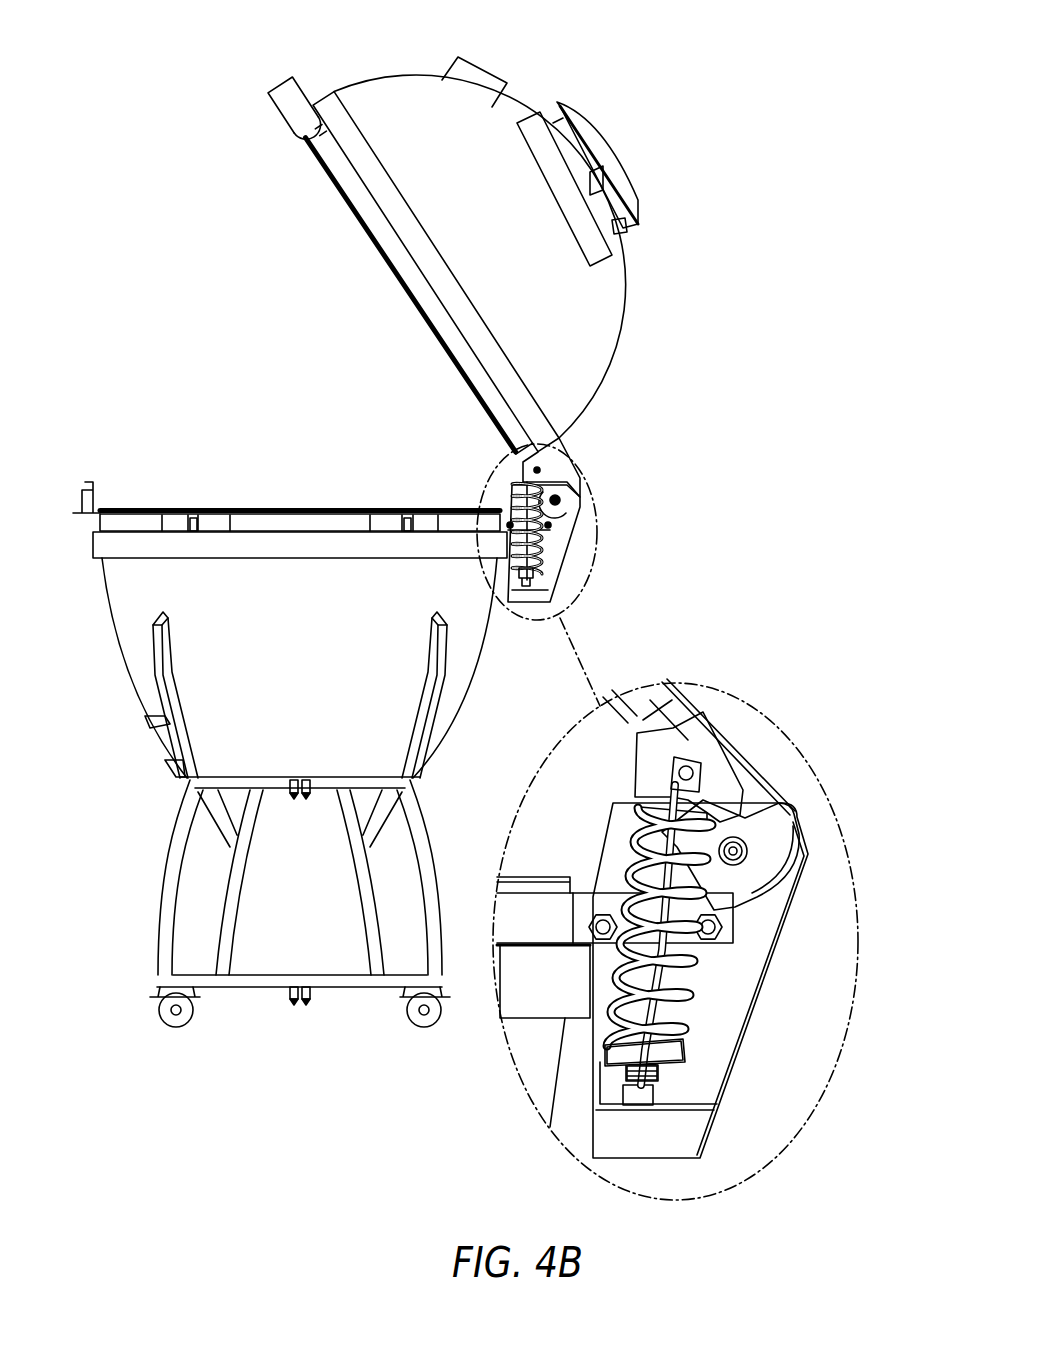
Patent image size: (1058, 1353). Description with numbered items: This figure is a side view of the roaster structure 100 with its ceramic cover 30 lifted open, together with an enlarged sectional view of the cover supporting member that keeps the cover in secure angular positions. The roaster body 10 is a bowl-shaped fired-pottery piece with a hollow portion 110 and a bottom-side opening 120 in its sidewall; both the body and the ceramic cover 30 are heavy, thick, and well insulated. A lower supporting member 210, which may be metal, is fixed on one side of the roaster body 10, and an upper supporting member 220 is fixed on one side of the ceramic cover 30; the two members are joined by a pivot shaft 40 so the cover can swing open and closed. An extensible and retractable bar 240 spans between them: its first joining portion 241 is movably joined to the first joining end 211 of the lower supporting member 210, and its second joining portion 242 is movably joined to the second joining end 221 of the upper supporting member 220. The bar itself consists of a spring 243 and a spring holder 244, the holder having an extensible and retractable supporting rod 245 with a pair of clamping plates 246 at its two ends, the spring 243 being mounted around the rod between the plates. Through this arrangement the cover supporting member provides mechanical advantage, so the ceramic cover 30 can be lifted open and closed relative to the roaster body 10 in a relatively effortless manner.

The roaster structure 100 is at (690, 82).
The roaster body 10 is at (118, 607).
The hollow portion 110 is at (255, 498).
The bottom-side opening 120 is at (163, 743).
The ceramic cover 30 is at (600, 299).
The pivot shaft 40 is at (565, 498).
The lower supporting member 210 is at (572, 542).
The first joining end 211 is at (653, 1097).
The upper supporting member 220 is at (548, 462).
The second joining end 221 is at (690, 718).
The extensible and retractable bar 240 is at (540, 568).
The first joining portion 241 is at (675, 1103).
The second joining portion 242 is at (700, 745).
The spring 243 is at (668, 938).
The spring holder 244 is at (903, 1052).
The extensible and retractable supporting rod 245 is at (683, 1062).
The clamping plates 246 is at (707, 813).